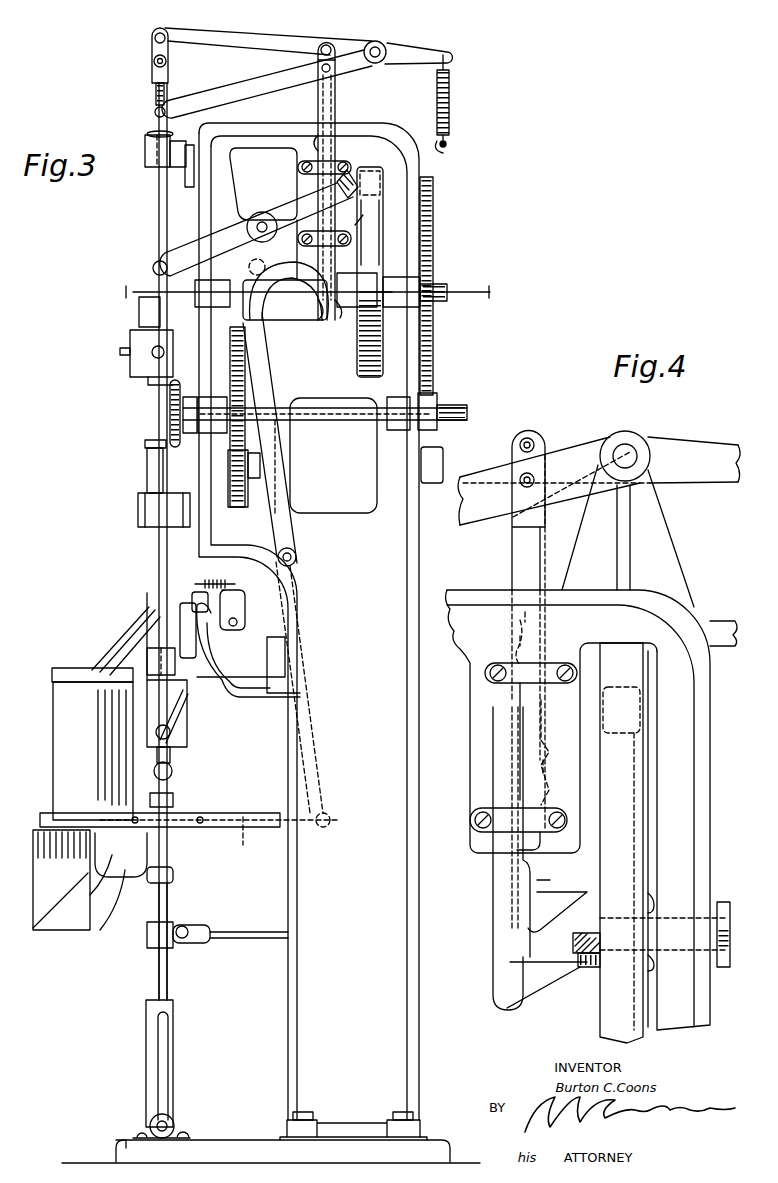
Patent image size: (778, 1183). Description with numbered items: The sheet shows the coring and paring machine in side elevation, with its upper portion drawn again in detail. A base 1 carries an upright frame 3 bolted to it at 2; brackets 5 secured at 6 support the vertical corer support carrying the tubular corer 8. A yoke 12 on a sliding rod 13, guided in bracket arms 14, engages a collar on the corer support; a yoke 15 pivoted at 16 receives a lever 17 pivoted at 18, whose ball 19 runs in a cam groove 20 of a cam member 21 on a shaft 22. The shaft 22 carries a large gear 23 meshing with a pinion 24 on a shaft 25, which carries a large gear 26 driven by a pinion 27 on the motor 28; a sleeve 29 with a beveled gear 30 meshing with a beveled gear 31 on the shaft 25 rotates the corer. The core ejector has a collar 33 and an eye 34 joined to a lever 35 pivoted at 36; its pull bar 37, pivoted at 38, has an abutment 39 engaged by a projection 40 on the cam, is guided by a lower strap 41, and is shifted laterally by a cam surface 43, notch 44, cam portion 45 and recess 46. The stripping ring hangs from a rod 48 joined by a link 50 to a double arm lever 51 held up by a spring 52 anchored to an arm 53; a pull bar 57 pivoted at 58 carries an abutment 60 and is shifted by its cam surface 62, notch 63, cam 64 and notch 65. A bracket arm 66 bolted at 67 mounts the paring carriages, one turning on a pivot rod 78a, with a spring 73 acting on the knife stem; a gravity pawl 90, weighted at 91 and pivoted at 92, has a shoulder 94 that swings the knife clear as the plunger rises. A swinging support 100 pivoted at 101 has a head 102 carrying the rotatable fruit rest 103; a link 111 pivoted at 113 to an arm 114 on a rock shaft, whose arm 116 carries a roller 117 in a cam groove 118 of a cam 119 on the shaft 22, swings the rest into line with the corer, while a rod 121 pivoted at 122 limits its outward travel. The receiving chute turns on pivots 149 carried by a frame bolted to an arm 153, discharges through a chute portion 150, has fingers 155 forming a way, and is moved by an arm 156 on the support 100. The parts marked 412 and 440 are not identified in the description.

In FIG. 3, the base 1 is at (133, 1146).
In FIG. 3, the bolt connection 2 is at (412, 1108).
In FIG. 3, the upright frame 3 is at (421, 785).
In FIG. 4, the upright frame 3 is at (694, 838).
In FIG. 3, the brackets 5 is at (178, 160).
In FIG. 3, the bracket fastening 6 is at (188, 185).
In FIG. 3, the tubular corer 8 is at (307, 284).
In FIG. 3, the yoke 12 is at (150, 366).
In FIG. 3, the sliding rod 13 is at (182, 410).
In FIG. 3, the bracket arms 14 is at (145, 150).
In FIG. 3, the yoke 15 is at (139, 309).
In FIG. 3, the pivot 16 is at (138, 344).
In FIG. 3, the lever 17 is at (154, 261).
In FIG. 3, the pivot 18 is at (258, 214).
In FIG. 3, the ball 19 is at (360, 186).
In FIG. 3, the cam groove 20 is at (385, 215).
In FIG. 3, the cam member 21 is at (370, 232).
In FIG. 4, the cam member 21 is at (623, 780).
In FIG. 3, the shaft 22 is at (448, 304).
In FIG. 3, the large gear 23 is at (436, 350).
In FIG. 3, the pinion 24 is at (439, 394).
In FIG. 3, the shaft 25 is at (470, 410).
In FIG. 3, the large gear 26 is at (247, 367).
In FIG. 3, the pinion 27 is at (240, 498).
In FIG. 3, the motor 28 is at (345, 488).
In FIG. 3, the sleeve 29 is at (147, 470).
In FIG. 3, the beveled gear 30 is at (145, 444).
In FIG. 3, the beveled gear 31 is at (170, 414).
In FIG. 3, the collar 33 is at (155, 112).
In FIG. 3, the eye 34 is at (155, 95).
In FIG. 3, the lever 35 is at (236, 86).
In FIG. 4, the lever 35 is at (577, 450).
In FIG. 3, the pivot 36 is at (383, 44).
In FIG. 4, the pivot 36 is at (632, 453).
In FIG. 3, the pull bar 37 is at (320, 108).
In FIG. 4, the pull bar 37 is at (520, 567).
In FIG. 3, the pivot 38 is at (337, 64).
In FIG. 4, the pivot 38 is at (525, 489).
In FIG. 3, the abutment 39 is at (342, 310).
In FIG. 4, the abutment 39 is at (540, 985).
In FIG. 4, the projection 40 is at (577, 970).
In FIG. 3, the guide strap 41 is at (158, 540).
In FIG. 4, the guide strap 41 is at (510, 827).
In FIG. 3, the cam surface 43 is at (316, 159).
In FIG. 4, the cam surface 43 is at (507, 691).
In FIG. 3, the notch 44 is at (352, 230).
In FIG. 4, the notch 44 is at (525, 861).
In FIG. 4, the cam portion 45 is at (549, 834).
In FIG. 3, the recess 46 is at (316, 140).
In FIG. 4, the recess 46 is at (508, 658).
In FIG. 3, the rod 48 is at (155, 70).
In FIG. 3, the link 50 is at (152, 49).
In FIG. 3, the double arm lever 51 is at (238, 35).
In FIG. 3, the spring 52 is at (450, 90).
In FIG. 3, the arm 53 is at (447, 148).
In FIG. 3, the pull bar 57 is at (321, 45).
In FIG. 4, the pull bar 57 is at (548, 565).
In FIG. 3, the pivot 58 is at (327, 64).
In FIG. 4, the pivot 58 is at (531, 440).
In FIG. 4, the abutment 60 is at (560, 903).
In FIG. 4, the cam surface 62 is at (546, 737).
In FIG. 4, the notch 63 is at (525, 617).
In FIG. 4, the cam 64 is at (520, 640).
In FIG. 4, the notch 65 is at (544, 764).
In FIG. 3, the bracket arm 66 is at (250, 693).
In FIG. 3, the bolt connection 67 is at (270, 718).
In FIG. 3, the spring 73 is at (227, 585).
In FIG. 3, the pivot rod 78a is at (242, 622).
In FIG. 3, the gravity pawl 90 is at (171, 752).
In FIG. 3, the weight 91 is at (173, 775).
In FIG. 3, the pivot 92 is at (171, 735).
In FIG. 3, the shoulder 94 is at (176, 700).
In FIG. 3, the swinging support 100 is at (158, 958).
In FIG. 3, the pivot 101 is at (168, 1120).
In FIG. 3, the head 102 is at (174, 797).
In FIG. 3, the fruit rest 103 is at (130, 719).
In FIG. 3, the link 111 is at (249, 839).
In FIG. 3, the pivot 113 is at (331, 822).
In FIG. 3, the arm 114 is at (323, 773).
In FIG. 3, the arm 116 is at (276, 387).
In FIG. 3, the roller 117 is at (263, 275).
In FIG. 3, the cam groove 118 is at (281, 312).
In FIG. 3, the cam 119 is at (286, 323).
In FIG. 3, the rod 121 is at (235, 937).
In FIG. 3, the pivotal connection 122 is at (190, 927).
In FIG. 3, the pivots 149 is at (110, 925).
In FIG. 3, the chute portion 150 is at (67, 920).
In FIG. 3, the arm 153 is at (229, 827).
In FIG. 3, the fingers 155 is at (122, 630).
In FIG. 3, the arm 156 is at (175, 875).
In FIG. 3, the clamp plate 412 is at (362, 233).
In FIG. 4, the clamp plate 412 is at (547, 668).
In FIG. 3, the shaft 440 is at (382, 292).